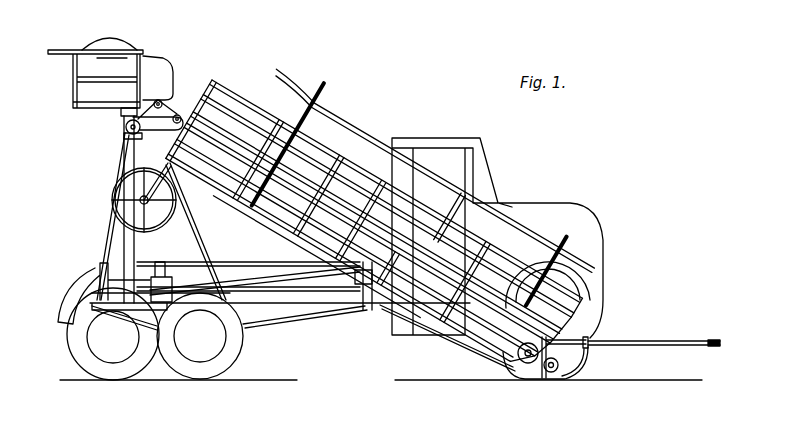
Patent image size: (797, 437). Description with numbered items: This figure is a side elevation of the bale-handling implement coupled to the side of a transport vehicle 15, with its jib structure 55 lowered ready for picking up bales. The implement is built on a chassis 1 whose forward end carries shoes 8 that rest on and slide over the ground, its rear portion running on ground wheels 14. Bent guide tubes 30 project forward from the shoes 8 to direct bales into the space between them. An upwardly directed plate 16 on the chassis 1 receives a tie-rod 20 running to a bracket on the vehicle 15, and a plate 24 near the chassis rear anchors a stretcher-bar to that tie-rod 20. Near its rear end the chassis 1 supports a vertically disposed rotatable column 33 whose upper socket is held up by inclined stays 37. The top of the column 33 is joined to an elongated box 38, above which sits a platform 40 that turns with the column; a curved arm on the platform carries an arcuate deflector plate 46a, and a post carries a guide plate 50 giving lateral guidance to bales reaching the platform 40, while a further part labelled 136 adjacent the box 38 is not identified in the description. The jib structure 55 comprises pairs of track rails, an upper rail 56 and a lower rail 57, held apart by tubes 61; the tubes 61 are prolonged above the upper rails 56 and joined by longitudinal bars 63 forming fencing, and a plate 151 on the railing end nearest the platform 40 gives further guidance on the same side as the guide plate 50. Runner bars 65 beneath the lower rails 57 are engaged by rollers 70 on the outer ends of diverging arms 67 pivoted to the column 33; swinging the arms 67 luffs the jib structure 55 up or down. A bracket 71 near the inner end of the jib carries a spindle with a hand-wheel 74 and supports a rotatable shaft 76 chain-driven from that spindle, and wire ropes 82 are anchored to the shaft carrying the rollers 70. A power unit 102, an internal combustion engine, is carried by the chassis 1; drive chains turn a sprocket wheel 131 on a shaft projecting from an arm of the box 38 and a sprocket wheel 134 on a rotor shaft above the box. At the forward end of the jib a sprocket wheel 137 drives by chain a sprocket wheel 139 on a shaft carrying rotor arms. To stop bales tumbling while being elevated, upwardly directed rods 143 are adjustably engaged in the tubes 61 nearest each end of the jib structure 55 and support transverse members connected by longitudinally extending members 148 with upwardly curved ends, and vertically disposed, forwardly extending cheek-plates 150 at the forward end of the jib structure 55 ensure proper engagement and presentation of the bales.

The chassis 1 is at (283, 330).
The shoes 8 is at (583, 370).
The ground wheels 14 is at (208, 376).
The transport vehicle 15 is at (520, 203).
The upwardly directed plate 16 is at (367, 290).
The second tie-rod 20 is at (227, 263).
The plate 24 is at (100, 272).
The guide tubes 30 is at (684, 342).
The rotatable column 33 is at (130, 248).
The inclined stays 37 is at (115, 171).
The elongated box 38 is at (125, 127).
The platform 40 is at (90, 103).
The deflector plate 46a is at (115, 42).
The guide plate 50 is at (166, 62).
The jib structure 55 is at (251, 100).
The upper rail 56 is at (240, 183).
The lower rail 57 is at (277, 197).
The tubes 61 is at (280, 140).
The longitudinally extending bars 63 is at (327, 177).
The runner bars 65 is at (270, 226).
The diverging arms 67 is at (273, 275).
The rollers 70 is at (360, 282).
The bracket 71 is at (170, 170).
The hand-wheel 74 is at (113, 216).
The rotatable shaft 76 is at (178, 150).
The wire ropes 82 is at (318, 251).
The power unit 102 is at (162, 262).
The sprocket wheel 131 is at (179, 114).
The sprocket wheel 134 is at (158, 99).
The bracket 136 is at (128, 135).
The sprocket wheel 137 is at (525, 358).
The sprocket wheel 139 is at (553, 373).
The upwardly directed rods 143 is at (323, 84).
The longitudinally extending members 148 is at (363, 140).
The cheek-plates 150 is at (562, 318).
The plate 151 is at (212, 84).